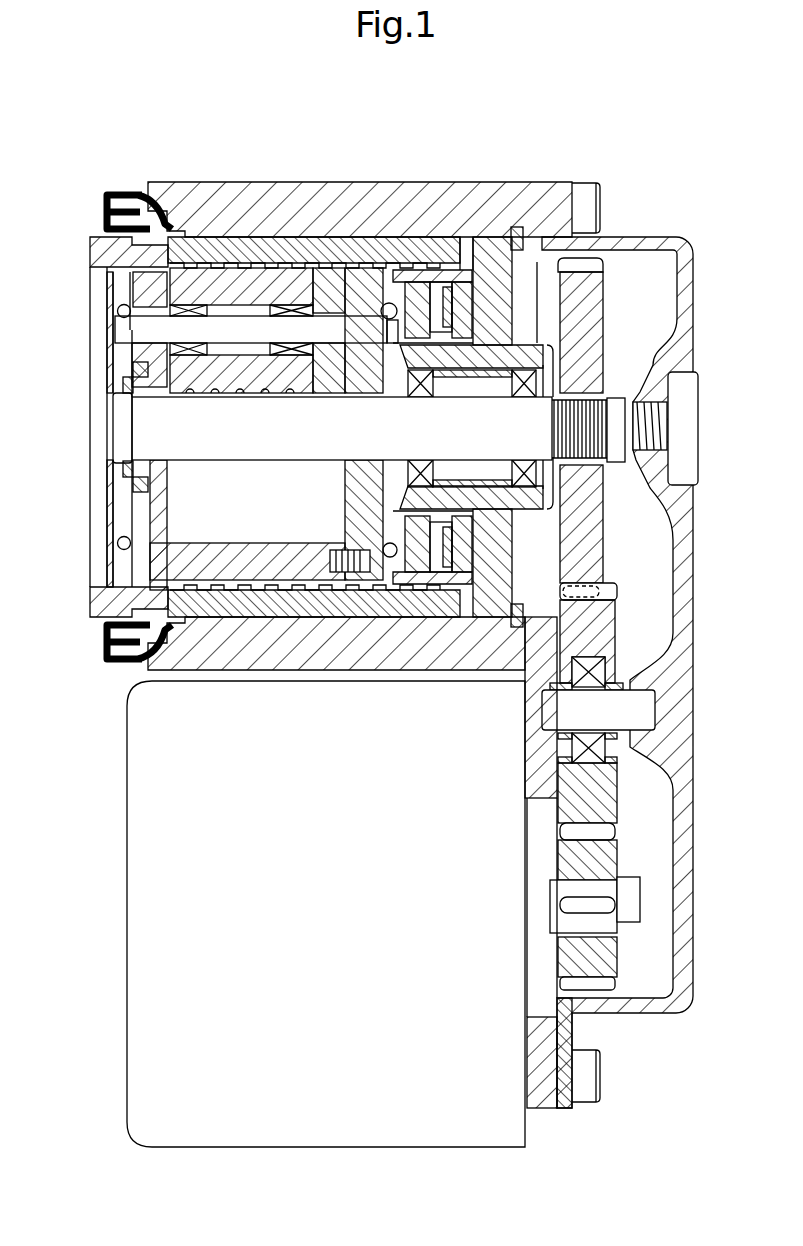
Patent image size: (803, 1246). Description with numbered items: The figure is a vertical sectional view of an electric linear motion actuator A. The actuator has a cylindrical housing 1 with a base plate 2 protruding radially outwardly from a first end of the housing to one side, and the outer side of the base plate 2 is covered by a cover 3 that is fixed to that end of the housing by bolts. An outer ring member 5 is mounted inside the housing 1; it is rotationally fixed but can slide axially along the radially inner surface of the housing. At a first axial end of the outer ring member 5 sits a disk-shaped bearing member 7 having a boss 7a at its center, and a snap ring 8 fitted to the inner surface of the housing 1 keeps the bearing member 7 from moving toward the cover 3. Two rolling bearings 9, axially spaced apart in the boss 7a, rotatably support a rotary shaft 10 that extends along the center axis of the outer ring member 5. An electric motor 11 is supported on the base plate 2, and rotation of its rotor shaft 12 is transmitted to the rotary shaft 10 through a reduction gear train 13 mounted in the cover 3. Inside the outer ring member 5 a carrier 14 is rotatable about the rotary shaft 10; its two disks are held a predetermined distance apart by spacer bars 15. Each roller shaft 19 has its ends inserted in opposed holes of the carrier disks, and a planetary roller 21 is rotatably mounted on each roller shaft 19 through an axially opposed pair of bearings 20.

The electric linear motion actuator A is at (152, 183).
The cylindrical housing 1 is at (222, 182).
The base plate 2 is at (537, 1057).
The cover 3 is at (686, 803).
The outer ring member 5 is at (290, 275).
The bearing member 7 is at (486, 258).
The boss 7a is at (545, 335).
The snap ring 8 is at (518, 228).
The rolling bearings 9 is at (430, 390).
The rotary shaft 10 is at (142, 423).
The electric motor 11 is at (130, 757).
The rotor shaft 12 is at (608, 893).
The reduction gear train 13 is at (604, 538).
The carrier 14 is at (132, 293).
The spacer bars 15 is at (262, 568).
The roller shaft 19 is at (235, 325).
The bearings 20 is at (295, 355).
The planetary roller 21 is at (352, 240).